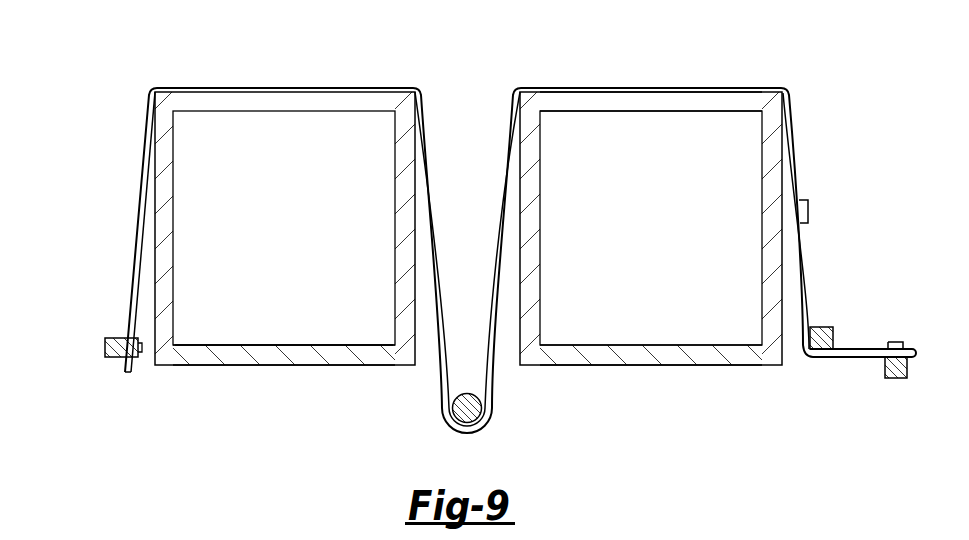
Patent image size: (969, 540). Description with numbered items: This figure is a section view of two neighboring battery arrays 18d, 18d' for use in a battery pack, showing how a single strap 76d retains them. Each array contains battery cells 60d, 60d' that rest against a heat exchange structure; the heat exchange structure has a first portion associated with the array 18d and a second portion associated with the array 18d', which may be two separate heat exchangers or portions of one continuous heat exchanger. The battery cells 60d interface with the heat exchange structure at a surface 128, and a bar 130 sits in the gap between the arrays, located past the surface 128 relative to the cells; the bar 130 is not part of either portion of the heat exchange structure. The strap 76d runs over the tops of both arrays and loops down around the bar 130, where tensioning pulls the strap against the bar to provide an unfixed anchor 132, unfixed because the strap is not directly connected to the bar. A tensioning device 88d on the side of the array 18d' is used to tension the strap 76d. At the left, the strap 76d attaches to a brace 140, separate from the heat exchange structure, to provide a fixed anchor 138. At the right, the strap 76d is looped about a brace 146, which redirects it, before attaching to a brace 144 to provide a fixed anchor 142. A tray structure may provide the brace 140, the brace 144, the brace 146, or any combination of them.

The array 18d is at (305, 216).
The array 18d' is at (671, 216).
The strap 76d is at (652, 86).
The battery cells 60d is at (285, 228).
The battery cells 60d' is at (651, 228).
The tensioning device 88d is at (810, 213).
The surface 128 is at (316, 341).
The bar 130 is at (468, 393).
The unfixed anchor 132 is at (446, 424).
The fixed anchor 138 is at (144, 372).
The brace 140 is at (104, 347).
The fixed anchor 142 is at (917, 370).
The brace 144 is at (885, 370).
The brace 146 is at (822, 326).